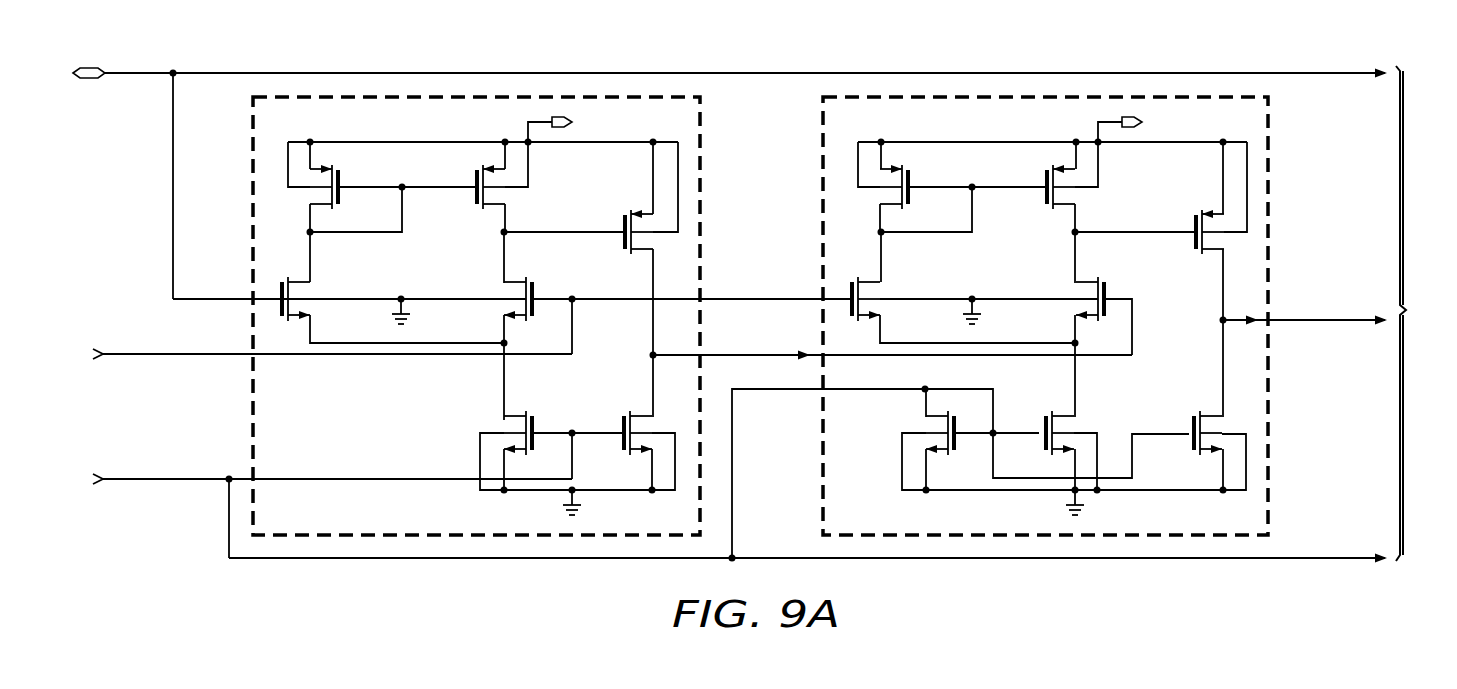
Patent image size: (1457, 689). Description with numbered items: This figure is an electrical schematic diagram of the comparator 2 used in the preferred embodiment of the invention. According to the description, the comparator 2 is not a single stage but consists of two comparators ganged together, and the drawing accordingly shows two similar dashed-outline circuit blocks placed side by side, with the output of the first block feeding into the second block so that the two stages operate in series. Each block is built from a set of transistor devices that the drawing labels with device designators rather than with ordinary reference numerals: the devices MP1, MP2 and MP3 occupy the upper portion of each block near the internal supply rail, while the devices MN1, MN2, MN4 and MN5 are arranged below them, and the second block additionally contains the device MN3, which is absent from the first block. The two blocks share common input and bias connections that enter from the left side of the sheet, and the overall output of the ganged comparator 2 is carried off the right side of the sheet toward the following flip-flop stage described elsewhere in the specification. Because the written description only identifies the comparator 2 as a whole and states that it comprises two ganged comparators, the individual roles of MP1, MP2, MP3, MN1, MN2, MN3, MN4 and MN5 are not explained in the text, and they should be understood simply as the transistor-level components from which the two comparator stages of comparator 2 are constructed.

The comparator 2 is at (822, 70).
The PMOS transistor MP1 is at (634, 186).
The PMOS transistor MP2 is at (751, 186).
The PMOS transistor MP3 is at (899, 231).
The NMOS transistor MN1 is at (573, 287).
The NMOS transistor MN2 is at (814, 287).
The NMOS transistor MN3 is at (951, 447).
The NMOS transistor MN4 is at (789, 421).
The NMOS transistor MN5 is at (912, 421).